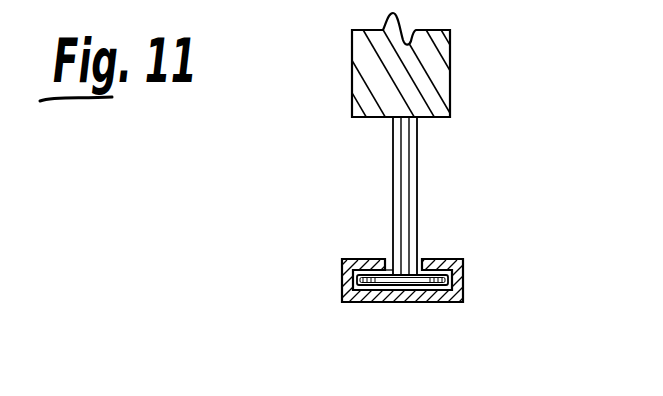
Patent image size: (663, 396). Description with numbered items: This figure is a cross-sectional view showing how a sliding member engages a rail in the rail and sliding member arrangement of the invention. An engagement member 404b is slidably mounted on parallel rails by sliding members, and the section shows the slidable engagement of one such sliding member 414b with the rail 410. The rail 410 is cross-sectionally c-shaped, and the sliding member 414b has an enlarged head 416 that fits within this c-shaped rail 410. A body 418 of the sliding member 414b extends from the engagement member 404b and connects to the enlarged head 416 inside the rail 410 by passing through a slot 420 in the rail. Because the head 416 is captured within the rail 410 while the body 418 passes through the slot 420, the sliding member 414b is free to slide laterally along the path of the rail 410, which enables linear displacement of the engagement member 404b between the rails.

The engagement member 404b is at (437, 64).
The sliding member 414b is at (417, 153).
The body 418 is at (393, 153).
The rail 410 is at (342, 275).
The enlarged head 416 is at (424, 285).
The slot 420 is at (392, 270).